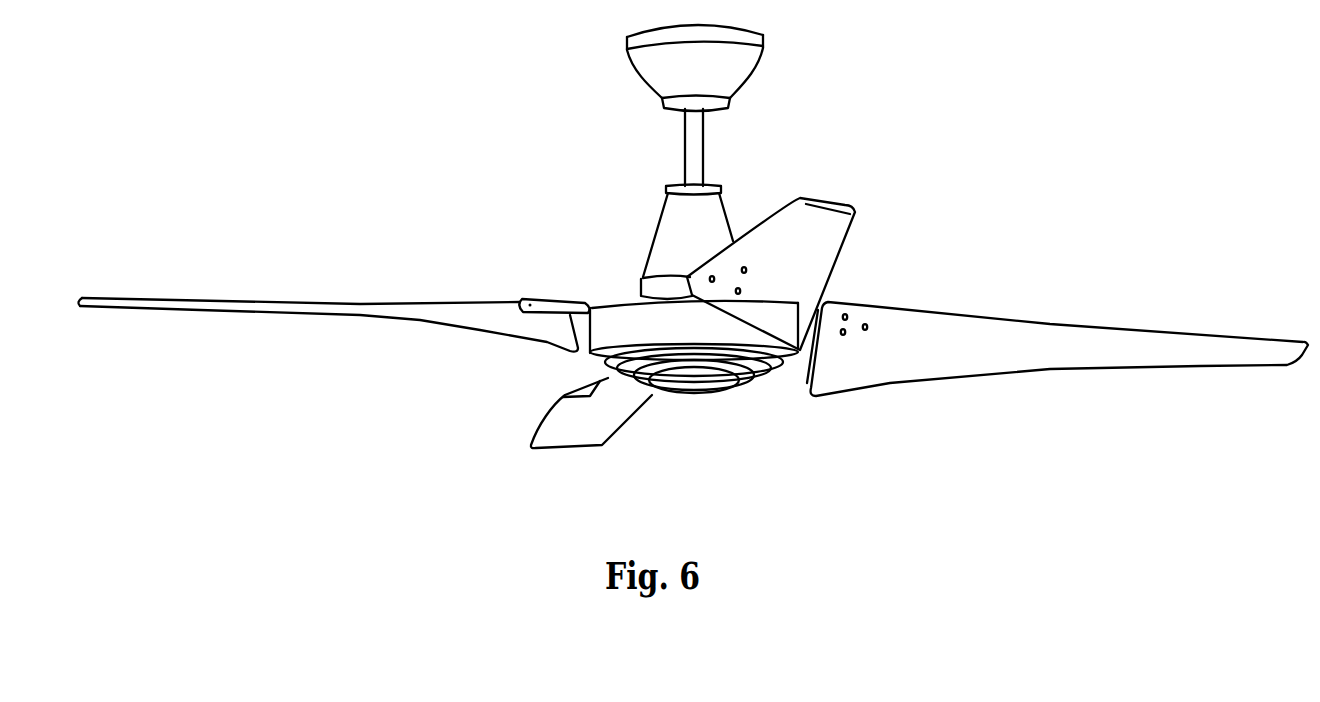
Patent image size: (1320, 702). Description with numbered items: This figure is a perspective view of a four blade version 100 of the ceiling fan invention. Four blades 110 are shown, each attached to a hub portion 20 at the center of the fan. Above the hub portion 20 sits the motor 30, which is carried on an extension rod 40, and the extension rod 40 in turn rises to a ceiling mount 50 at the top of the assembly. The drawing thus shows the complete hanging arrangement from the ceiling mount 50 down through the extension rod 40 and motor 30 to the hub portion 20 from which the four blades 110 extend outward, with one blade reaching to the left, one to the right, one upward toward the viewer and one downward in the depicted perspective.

The four blade version 100 is at (457, 179).
The blades 110 is at (488, 277).
The hub portion 20 is at (694, 335).
The motor 30 is at (715, 230).
The extension rod 40 is at (693, 155).
The ceiling mount 50 is at (723, 73).